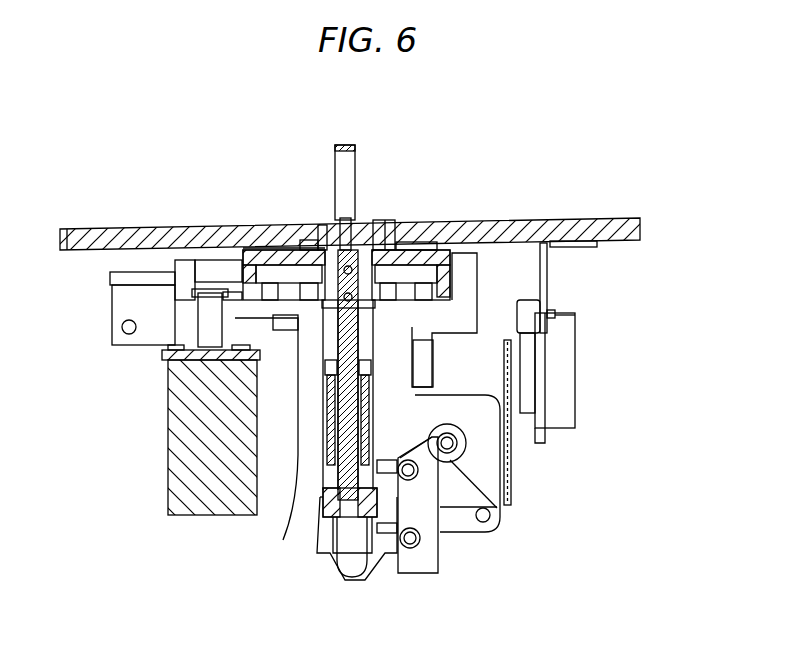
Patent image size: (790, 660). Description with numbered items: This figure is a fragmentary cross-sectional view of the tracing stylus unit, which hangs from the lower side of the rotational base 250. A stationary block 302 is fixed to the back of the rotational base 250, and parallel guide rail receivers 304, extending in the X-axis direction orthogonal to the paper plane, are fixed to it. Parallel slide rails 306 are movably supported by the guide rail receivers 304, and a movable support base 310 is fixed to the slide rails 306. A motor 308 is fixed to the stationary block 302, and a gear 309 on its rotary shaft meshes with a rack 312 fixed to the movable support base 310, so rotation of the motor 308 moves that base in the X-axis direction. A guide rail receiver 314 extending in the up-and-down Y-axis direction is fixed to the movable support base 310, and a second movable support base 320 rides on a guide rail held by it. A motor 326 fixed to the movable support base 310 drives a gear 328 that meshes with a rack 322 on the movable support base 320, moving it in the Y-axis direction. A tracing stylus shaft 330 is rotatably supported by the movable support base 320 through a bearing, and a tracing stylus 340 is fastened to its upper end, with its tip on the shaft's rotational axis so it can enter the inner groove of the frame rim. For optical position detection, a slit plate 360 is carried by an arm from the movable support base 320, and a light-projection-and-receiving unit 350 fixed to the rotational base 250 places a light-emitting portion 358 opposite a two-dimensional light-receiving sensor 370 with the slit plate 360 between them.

The rotational base 250 is at (547, 220).
The stationary block 302 is at (413, 247).
The guide rail receivers 304 is at (283, 250).
The slide rails 306 is at (263, 243).
The motor 308 is at (168, 483).
The gear 309 is at (235, 310).
The movable support base 310 is at (200, 330).
The rack 312 is at (233, 297).
The guide rail receiver 314 is at (330, 338).
The movable support base 320 is at (300, 500).
The rack 322 is at (433, 562).
The motor 326 is at (482, 469).
The gear 328 is at (494, 508).
The tracing stylus shaft 330 is at (360, 326).
The tracing stylus 340 is at (347, 144).
The light-projection-and-receiving unit 350 is at (690, 310).
The light-emitting portion 358 is at (433, 377).
The slit plate 360 is at (508, 467).
The two-dimensional light-receiving sensor 370 is at (567, 380).